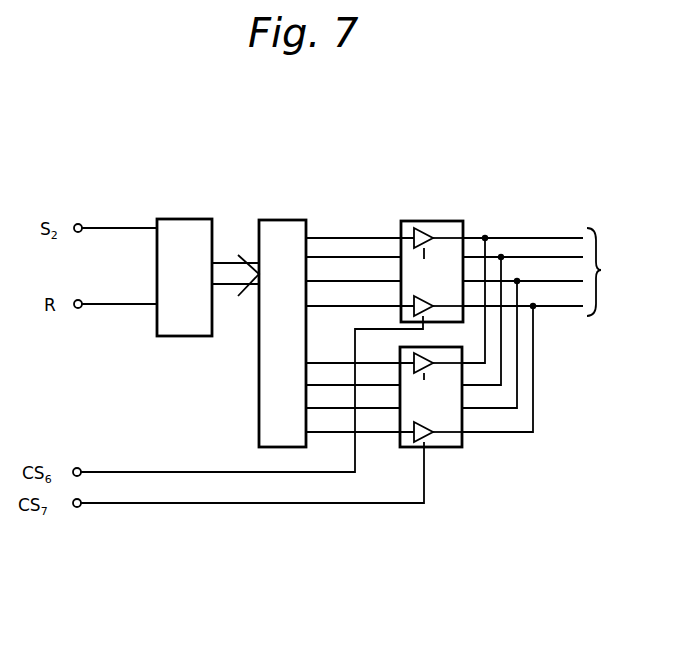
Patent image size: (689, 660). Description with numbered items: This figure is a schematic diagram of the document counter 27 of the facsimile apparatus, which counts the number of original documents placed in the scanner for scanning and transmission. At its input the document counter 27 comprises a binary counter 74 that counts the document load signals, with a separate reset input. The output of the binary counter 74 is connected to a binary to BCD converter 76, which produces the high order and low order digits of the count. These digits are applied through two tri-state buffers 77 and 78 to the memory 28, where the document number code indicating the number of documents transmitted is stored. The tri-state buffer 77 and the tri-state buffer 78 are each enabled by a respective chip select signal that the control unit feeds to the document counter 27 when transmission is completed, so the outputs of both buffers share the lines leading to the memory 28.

The binary counter 74 is at (184, 256).
The binary to BCD converter 76 is at (282, 311).
The tri-state buffer 77 is at (432, 250).
The tri-state buffer 78 is at (435, 424).
The document counter 27 is at (523, 234).
The memory 28 is at (607, 272).